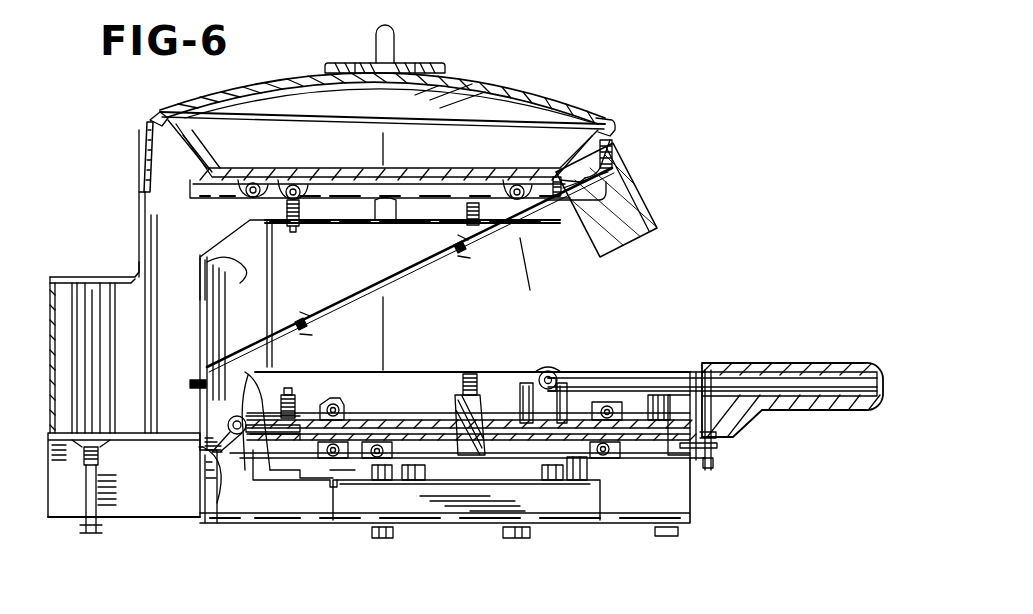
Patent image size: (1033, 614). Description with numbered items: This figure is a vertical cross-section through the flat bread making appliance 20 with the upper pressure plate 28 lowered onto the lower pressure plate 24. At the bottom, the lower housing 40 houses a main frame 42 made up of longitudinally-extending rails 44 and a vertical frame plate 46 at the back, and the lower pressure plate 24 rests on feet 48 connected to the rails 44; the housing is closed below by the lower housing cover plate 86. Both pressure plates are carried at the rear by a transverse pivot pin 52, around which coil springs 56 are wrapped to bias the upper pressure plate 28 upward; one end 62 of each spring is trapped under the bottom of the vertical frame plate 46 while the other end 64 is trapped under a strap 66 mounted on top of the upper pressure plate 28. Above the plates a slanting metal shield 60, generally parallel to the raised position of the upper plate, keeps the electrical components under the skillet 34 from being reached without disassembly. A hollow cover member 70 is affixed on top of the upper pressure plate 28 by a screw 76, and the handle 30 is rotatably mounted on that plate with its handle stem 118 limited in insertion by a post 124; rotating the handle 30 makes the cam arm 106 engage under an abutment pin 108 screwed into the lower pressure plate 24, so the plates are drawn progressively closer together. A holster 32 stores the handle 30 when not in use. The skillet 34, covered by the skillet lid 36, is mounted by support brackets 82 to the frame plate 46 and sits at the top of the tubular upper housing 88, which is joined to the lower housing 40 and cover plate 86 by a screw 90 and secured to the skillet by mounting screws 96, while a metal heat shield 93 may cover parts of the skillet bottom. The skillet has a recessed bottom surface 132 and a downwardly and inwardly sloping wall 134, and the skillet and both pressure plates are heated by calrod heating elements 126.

The flat bread making appliance 20 is at (668, 198).
The lower pressure plate 24 is at (673, 460).
The upper pressure plate 28 is at (500, 402).
The handle 30 is at (770, 362).
The holster 32 is at (50, 312).
The skillet 34 is at (503, 143).
The skillet lid 36 is at (490, 90).
The lower housing 40 is at (48, 500).
The main frame 42 is at (200, 296).
The rails 44 is at (545, 505).
The vertical frame plate 46 is at (221, 255).
The feet 48 is at (358, 473).
The pivot pin 52 is at (236, 440).
The coil springs 56 is at (228, 416).
The metal shield 60 is at (440, 255).
The one end of coil spring 62 is at (210, 518).
The other end of coil spring 64 is at (252, 378).
The strap 66 is at (305, 392).
The cover member 70 is at (527, 368).
The screw 76 is at (470, 372).
The support brackets 82 is at (380, 266).
The lower housing cover plate 86 is at (302, 520).
The upper housing 88 is at (137, 207).
The screw 90 is at (100, 455).
The metal heat shield 93 is at (147, 178).
The mounting screws 96 is at (290, 222).
The cam arm 106 is at (710, 463).
The abutment pin 108 is at (717, 443).
The handle stem 118 is at (630, 378).
The post 124 is at (583, 383).
The calrod heating elements 126 is at (255, 175).
The recessed bottom surface 132 is at (465, 175).
The sloping wall 134 is at (588, 143).